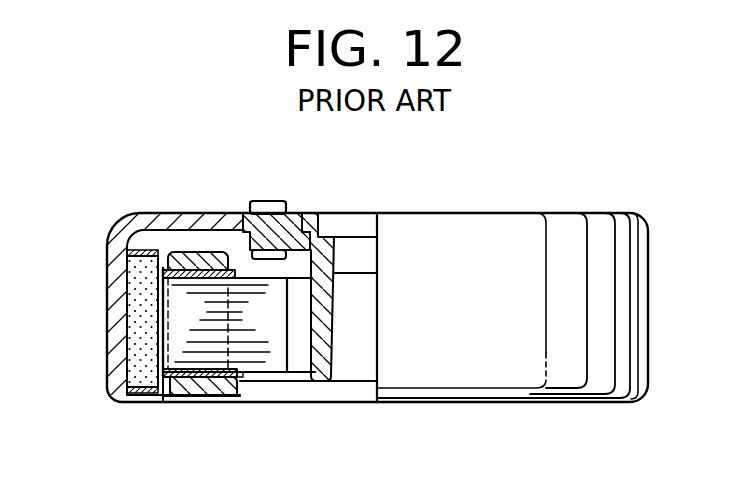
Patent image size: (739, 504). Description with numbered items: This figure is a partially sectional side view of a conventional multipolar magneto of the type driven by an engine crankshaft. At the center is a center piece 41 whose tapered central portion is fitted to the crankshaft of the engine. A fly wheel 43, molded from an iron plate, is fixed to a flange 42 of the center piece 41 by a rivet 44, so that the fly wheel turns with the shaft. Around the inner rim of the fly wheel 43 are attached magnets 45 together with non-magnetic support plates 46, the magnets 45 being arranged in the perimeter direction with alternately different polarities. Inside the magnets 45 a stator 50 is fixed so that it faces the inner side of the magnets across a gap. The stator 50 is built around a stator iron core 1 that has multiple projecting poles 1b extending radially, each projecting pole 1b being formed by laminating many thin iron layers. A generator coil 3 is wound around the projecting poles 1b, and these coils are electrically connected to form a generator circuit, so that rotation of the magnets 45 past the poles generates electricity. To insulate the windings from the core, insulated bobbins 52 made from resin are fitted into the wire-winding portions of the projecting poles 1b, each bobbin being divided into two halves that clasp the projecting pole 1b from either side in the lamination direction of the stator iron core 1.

The stator iron core 1 is at (275, 305).
The projecting pole 1b is at (182, 403).
The generator coil 3 is at (212, 398).
The center piece 41 is at (320, 365).
The flange 42 is at (250, 237).
The fly wheel 43 is at (112, 243).
The rivet 44 is at (272, 202).
The magnet 45 is at (137, 345).
The non-magnetic support plate 46 is at (140, 265).
The stator 50 is at (267, 342).
The insulated bobbin 52 is at (243, 378).